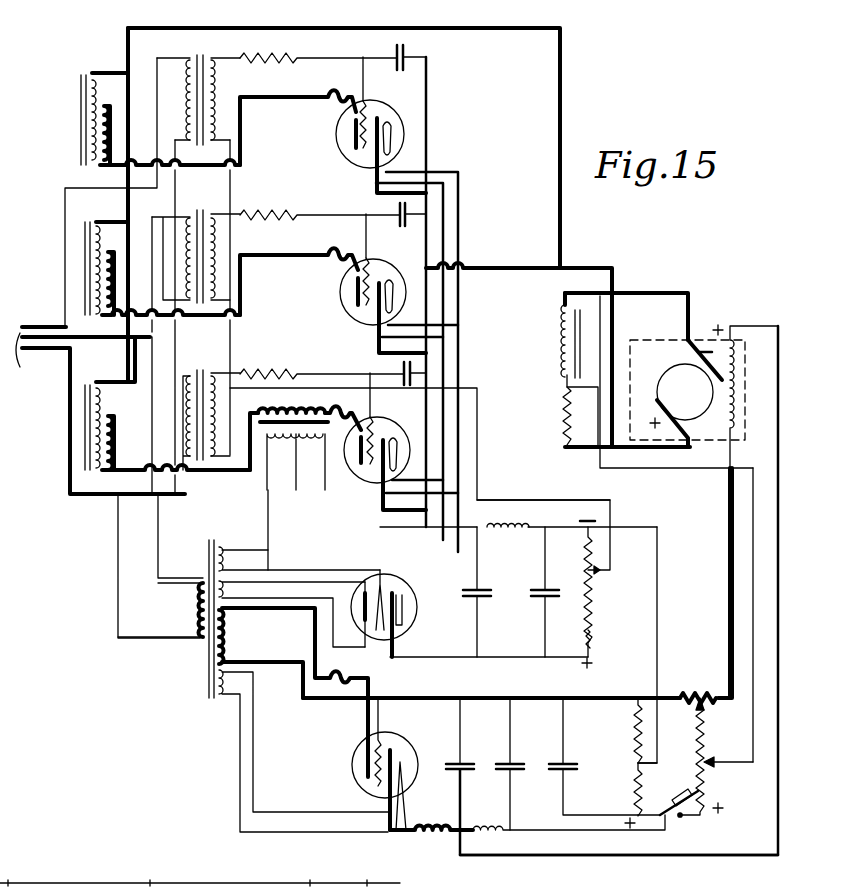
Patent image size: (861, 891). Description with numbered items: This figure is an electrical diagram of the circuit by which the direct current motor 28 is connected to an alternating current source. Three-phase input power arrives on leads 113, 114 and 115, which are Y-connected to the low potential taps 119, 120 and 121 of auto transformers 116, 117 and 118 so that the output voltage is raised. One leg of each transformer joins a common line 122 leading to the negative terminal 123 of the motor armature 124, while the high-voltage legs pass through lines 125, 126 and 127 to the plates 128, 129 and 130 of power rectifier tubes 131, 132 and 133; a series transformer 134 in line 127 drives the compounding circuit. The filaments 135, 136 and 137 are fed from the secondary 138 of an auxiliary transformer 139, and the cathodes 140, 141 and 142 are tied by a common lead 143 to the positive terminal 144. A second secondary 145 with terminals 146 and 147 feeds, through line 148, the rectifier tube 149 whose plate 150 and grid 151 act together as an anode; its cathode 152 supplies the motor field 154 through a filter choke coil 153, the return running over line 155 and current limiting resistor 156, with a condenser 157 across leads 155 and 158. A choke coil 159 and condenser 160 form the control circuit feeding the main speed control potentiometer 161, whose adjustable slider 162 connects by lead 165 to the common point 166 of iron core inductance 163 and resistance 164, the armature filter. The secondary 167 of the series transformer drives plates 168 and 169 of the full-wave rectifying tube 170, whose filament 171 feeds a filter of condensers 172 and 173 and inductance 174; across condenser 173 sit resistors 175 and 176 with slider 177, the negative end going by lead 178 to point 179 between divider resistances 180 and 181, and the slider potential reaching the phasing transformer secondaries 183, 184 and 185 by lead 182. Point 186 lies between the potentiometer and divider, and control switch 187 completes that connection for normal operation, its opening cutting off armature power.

The direct current motor 28 is at (672, 378).
The lead 113 is at (40, 326).
The lead 114 is at (83, 356).
The lead 115 is at (49, 350).
The auto transformer 116 is at (81, 114).
The auto transformer 117 is at (85, 266).
The auto transformer 118 is at (85, 439).
The low potential tap 119 is at (103, 107).
The low potential tap 120 is at (109, 254).
The low potential tap 121 is at (114, 416).
The common line 122 is at (127, 54).
The negative terminal 123 is at (690, 316).
The motor armature 124 is at (678, 368).
The line 125 is at (242, 145).
The line 126 is at (244, 280).
The line 127 is at (222, 478).
The plate 128 is at (350, 141).
The plate 129 is at (352, 298).
The plate 130 is at (358, 468).
The power rectifier tube 131 is at (381, 139).
The power rectifier tube 132 is at (369, 297).
The power rectifier tube 133 is at (383, 456).
The series transformer 134 is at (294, 416).
The filament 135 is at (390, 136).
The filament 136 is at (392, 282).
The filament 137 is at (399, 445).
The secondary 138 is at (226, 550).
The auxiliary transformer 139 is at (200, 643).
The cathode 140 is at (368, 154).
The cathode 141 is at (376, 310).
The cathode 142 is at (378, 482).
The common lead 143 is at (504, 269).
The positive terminal 144 is at (688, 438).
The secondary 145 is at (224, 645).
The terminal 146 is at (232, 610).
The terminal 147 is at (256, 672).
The line 148 is at (315, 658).
The rectifier tube 149 is at (377, 764).
The plate 150 is at (364, 760).
The grid 151 is at (368, 749).
The cathode 152 is at (401, 750).
The filter choke coil 153 is at (428, 833).
The motor field 154 is at (738, 360).
The line 155 is at (432, 698).
The current limiting resistor 156 is at (685, 690).
The condenser 157 is at (450, 770).
The lead 158 is at (465, 857).
The choke coil 159 is at (501, 832).
The condenser 160 is at (512, 770).
The main speed control potentiometer 161 is at (707, 772).
The adjustable slider 162 is at (711, 762).
The iron core inductance 163 is at (564, 324).
The resistance 164 is at (566, 423).
The lead 165 is at (614, 468).
The common point 166 is at (566, 384).
The secondary 167 is at (284, 448).
The plate 168 is at (360, 590).
The plate 169 is at (385, 603).
The full-wave rectifying tube 170 is at (398, 636).
The filament 171 is at (384, 589).
The condenser 172 is at (481, 598).
The condenser 173 is at (539, 600).
The inductance 174 is at (504, 536).
The resistor 175 is at (592, 636).
The resistor 176 is at (586, 556).
The slider 177 is at (598, 578).
The lead 178 is at (657, 562).
The point 179 is at (638, 766).
The fixed divider resistance 180 is at (638, 790).
The fixed divider resistance 181 is at (634, 714).
The lead 182 is at (530, 502).
The phasing transformer secondary 183 is at (214, 105).
The phasing transformer secondary 184 is at (229, 256).
The phasing transformer secondary 185 is at (230, 405).
The point 186 is at (705, 816).
The control switch 187 is at (672, 815).